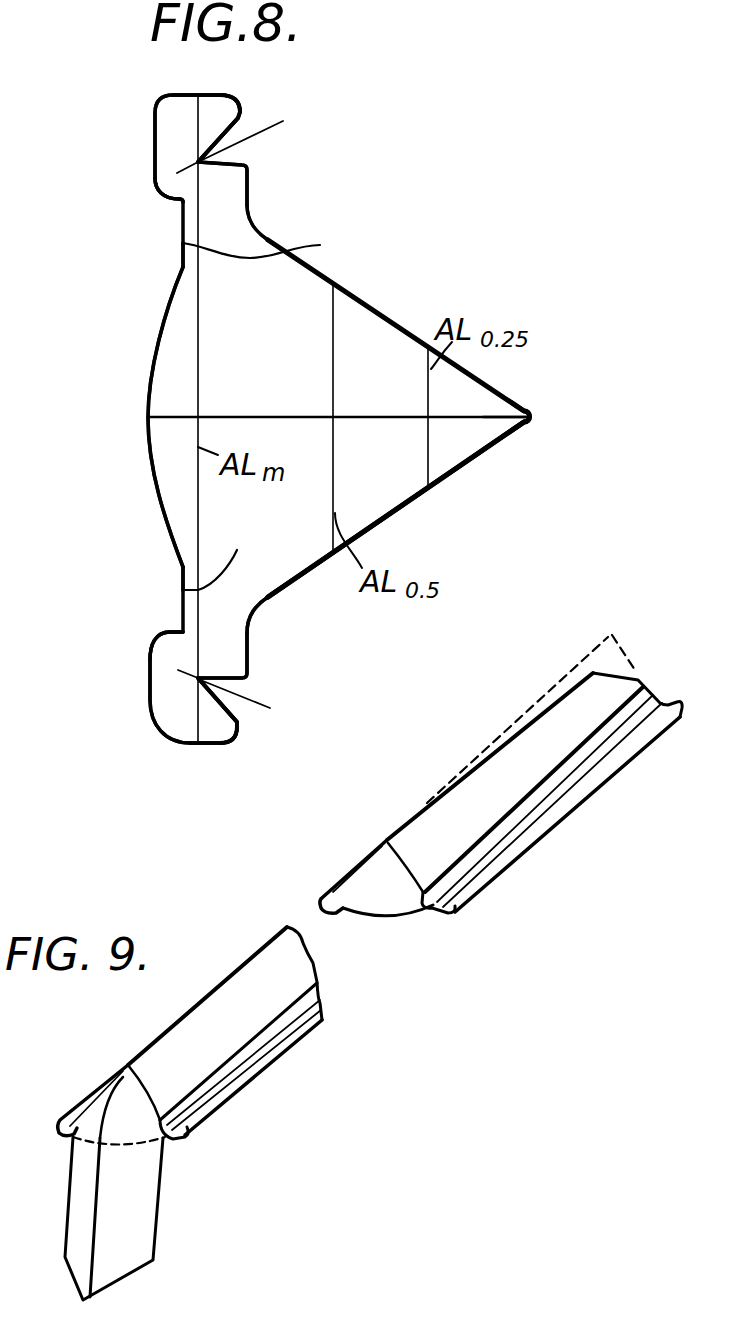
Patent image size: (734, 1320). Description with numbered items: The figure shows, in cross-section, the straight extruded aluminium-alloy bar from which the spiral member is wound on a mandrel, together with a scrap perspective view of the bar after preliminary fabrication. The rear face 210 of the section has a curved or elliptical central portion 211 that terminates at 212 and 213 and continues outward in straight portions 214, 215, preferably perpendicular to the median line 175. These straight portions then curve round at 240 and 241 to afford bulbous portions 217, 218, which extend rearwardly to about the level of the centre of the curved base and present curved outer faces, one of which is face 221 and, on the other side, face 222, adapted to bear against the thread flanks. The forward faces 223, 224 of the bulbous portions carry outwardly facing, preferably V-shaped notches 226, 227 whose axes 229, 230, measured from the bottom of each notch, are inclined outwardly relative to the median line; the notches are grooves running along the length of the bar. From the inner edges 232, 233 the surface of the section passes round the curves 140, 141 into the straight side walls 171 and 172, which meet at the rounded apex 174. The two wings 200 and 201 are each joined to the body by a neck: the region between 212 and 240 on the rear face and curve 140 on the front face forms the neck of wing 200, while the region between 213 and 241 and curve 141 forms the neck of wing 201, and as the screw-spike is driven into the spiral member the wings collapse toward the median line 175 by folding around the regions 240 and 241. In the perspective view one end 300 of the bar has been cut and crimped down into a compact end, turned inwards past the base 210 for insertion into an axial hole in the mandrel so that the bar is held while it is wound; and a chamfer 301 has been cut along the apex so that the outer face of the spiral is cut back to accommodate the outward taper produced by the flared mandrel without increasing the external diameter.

In FIG. 8, the wing 200 is at (182, 108).
In FIG. 8, the wing 201 is at (182, 715).
In FIG. 8, the rear face 210 is at (147, 453).
In FIG. 8, the curved central portion 211 is at (152, 377).
In FIG. 8, the termination point of curved central portion 212 is at (181, 266).
In FIG. 8, the termination point of curved central portion 213 is at (181, 575).
In FIG. 8, the straight portion 214 is at (282, 244).
In FIG. 8, the straight portion 215 is at (230, 555).
In FIG. 8, the bulbous portion 217 is at (165, 141).
In FIG. 8, the bulbous portion 218 is at (165, 697).
In FIG. 8, the curved outer face 221 is at (210, 93).
In FIG. 8, the second end surface 222 is at (187, 745).
In FIG. 8, the forward face 223 is at (245, 99).
In FIG. 8, the forward face 224 is at (238, 733).
In FIG. 8, the notch 226 is at (225, 152).
In FIG. 8, the notch 227 is at (241, 689).
In FIG. 8, the notch axis 229 is at (282, 123).
In FIG. 8, the notch axis 230 is at (266, 707).
In FIG. 8, the inner edge 232 is at (245, 165).
In FIG. 8, the inner edge 233 is at (250, 675).
In FIG. 8, the curved region 240 is at (181, 201).
In FIG. 8, the curved region 241 is at (181, 628).
In FIG. 8, the curve 140 is at (261, 224).
In FIG. 8, the curve 141 is at (284, 603).
In FIG. 8, the side wall 171 is at (352, 292).
In FIG. 8, the side wall 172 is at (418, 498).
In FIG. 8, the apex 174 is at (548, 394).
In FIG. 8, the median line 175 is at (484, 418).
In FIG. 9, the cut and crimped end 300 is at (163, 1165).
In FIG. 9, the chamfer 301 is at (563, 727).